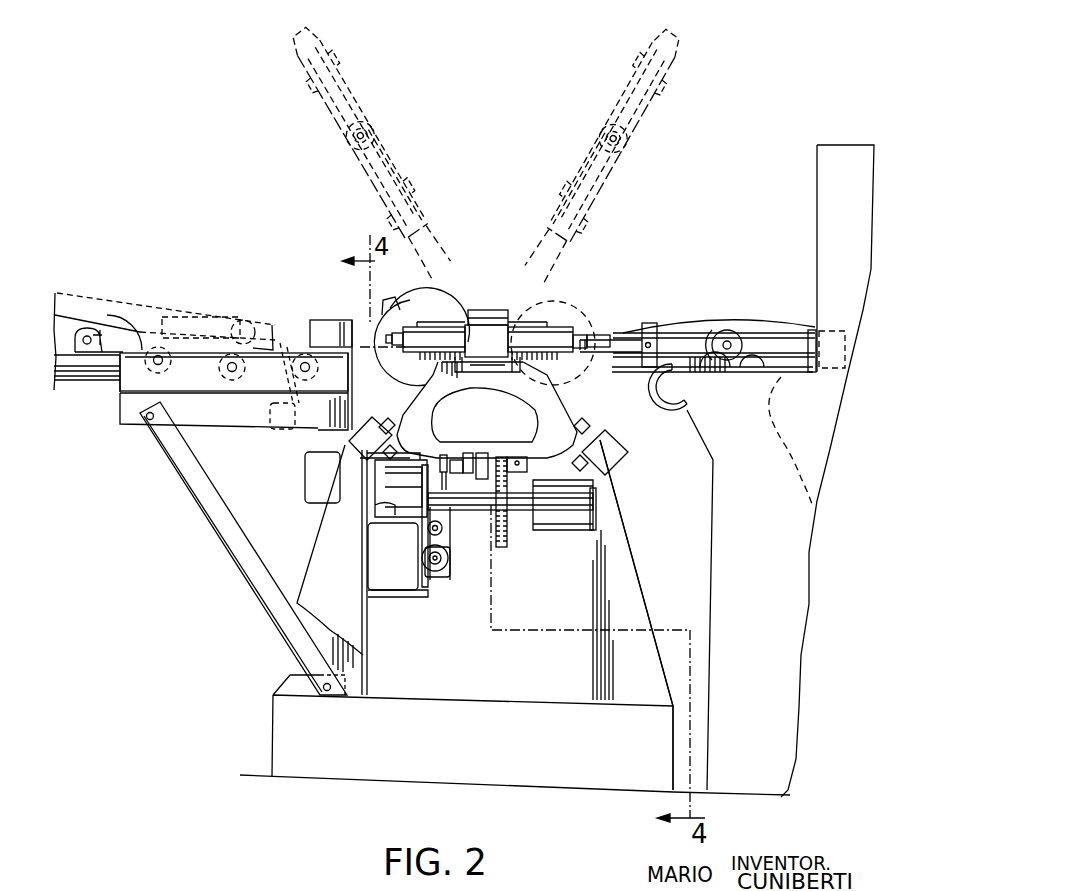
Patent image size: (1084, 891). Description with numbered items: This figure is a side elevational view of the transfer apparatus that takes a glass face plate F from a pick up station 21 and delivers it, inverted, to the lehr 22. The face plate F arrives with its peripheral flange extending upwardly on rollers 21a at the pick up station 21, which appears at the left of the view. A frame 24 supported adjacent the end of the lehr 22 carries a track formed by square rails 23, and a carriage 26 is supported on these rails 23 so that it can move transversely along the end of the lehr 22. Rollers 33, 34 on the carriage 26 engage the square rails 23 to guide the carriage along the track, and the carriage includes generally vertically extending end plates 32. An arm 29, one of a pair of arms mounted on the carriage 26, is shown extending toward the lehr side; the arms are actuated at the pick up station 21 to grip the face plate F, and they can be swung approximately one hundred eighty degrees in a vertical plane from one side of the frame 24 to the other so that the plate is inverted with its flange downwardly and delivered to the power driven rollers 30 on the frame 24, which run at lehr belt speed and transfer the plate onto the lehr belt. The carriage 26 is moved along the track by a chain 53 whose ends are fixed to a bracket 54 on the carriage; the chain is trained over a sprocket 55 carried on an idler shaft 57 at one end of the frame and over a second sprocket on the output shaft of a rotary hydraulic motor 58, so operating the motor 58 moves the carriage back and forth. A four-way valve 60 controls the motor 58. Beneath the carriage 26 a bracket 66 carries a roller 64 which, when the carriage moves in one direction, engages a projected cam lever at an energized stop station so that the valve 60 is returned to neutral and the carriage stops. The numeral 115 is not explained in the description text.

The pick up station 21 is at (123, 408).
The rollers 21a is at (152, 352).
The hidden support member 115 is at (294, 446).
The lehr 22 is at (819, 207).
The rails 23 is at (366, 426).
The frame 24 is at (637, 602).
The carriage 26 is at (560, 410).
The arm 29 is at (615, 345).
The power driven rollers 30 is at (667, 412).
The end plates 32 is at (445, 404).
The rollers 33 is at (390, 418).
The rollers 34 is at (392, 448).
The chain 53 is at (505, 535).
The bracket 54 is at (517, 472).
The sprocket 55 is at (505, 528).
The idler shaft 57 is at (467, 500).
The rotary hydraulic motor 58 is at (565, 520).
The four-way valve 60 is at (440, 575).
The roller 64 is at (442, 455).
The bracket 66 is at (453, 453).
The glass face plate F is at (760, 328).